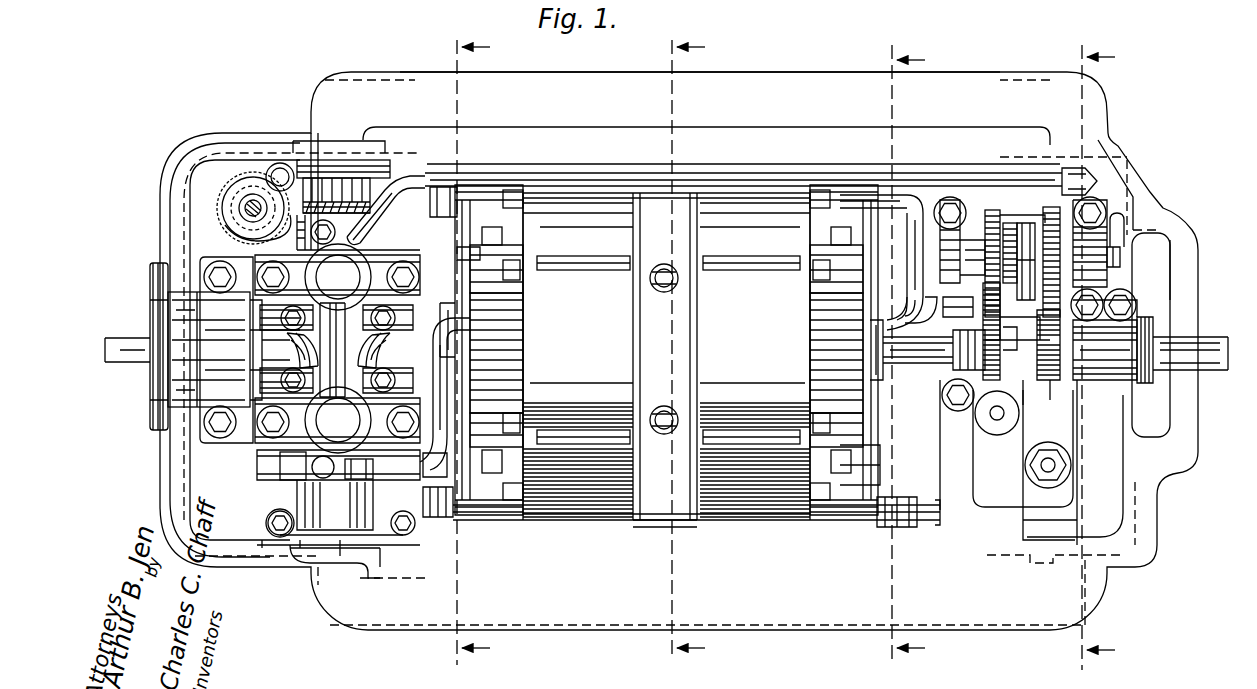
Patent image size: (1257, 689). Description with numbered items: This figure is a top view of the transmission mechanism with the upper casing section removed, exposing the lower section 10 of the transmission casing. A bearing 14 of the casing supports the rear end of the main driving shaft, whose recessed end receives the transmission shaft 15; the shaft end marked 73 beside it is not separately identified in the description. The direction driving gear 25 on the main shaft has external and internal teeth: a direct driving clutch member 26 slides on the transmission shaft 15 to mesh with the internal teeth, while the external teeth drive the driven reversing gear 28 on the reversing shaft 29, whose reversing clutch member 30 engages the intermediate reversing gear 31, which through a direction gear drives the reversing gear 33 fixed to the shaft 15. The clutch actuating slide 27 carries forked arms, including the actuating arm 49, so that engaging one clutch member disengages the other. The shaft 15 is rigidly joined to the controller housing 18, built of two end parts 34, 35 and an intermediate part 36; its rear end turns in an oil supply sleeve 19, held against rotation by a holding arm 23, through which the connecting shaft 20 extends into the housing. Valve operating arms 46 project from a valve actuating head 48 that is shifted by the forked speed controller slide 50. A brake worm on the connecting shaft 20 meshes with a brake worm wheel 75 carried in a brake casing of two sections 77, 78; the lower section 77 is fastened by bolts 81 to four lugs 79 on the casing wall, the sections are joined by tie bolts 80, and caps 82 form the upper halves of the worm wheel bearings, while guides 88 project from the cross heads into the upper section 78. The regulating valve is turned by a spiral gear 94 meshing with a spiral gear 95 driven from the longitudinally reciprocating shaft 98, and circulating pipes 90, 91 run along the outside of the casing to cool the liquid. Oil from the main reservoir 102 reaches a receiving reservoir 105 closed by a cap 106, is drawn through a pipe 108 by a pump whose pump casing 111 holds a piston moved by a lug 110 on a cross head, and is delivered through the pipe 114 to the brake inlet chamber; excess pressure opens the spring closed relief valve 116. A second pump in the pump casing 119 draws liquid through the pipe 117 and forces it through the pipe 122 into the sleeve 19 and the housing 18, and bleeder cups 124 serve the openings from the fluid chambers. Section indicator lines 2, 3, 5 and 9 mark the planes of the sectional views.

The section line 2- 2 is at (905, 357).
The section line 3- 3 is at (683, 346).
The electric motor 5 is at (790, 352).
The section line 9- 9 is at (1093, 358).
The lower section of transmission casing 10 is at (1104, 586).
The bearing 14 is at (1145, 385).
The transmission shaft 15 is at (905, 366).
The controller housing 18 is at (622, 522).
The oil supply sleeve 19 is at (455, 345).
The connecting shaft 20 is at (118, 338).
The holding arm 23 is at (440, 318).
The direction driving gear 25 is at (1065, 375).
The direct driving clutch member 26 is at (1035, 385).
The clutch actuating slide 27 is at (1040, 306).
The driven reversing gear 28 is at (1062, 258).
The reversing shaft 29 is at (1120, 258).
The reversing clutch member 30 is at (1010, 240).
The intermediate reversing gear 31 is at (990, 212).
The reversing gear 33 is at (954, 306).
The end part of controller housing 34 is at (562, 498).
The end part of controller housing 35 is at (745, 505).
The intermediate part of controller housing 36 is at (688, 294).
The valve operating arm 46 is at (870, 370).
The valve actuating head 48 is at (912, 315).
The actuating arm 49 is at (987, 255).
The speed controller slide 50 is at (960, 372).
The drive shaft 73 is at (1218, 372).
The brake worm wheel 75 is at (372, 335).
The brake casing section 77 is at (262, 432).
The brake casing section 78 is at (266, 518).
The lugs 79 is at (262, 543).
The tie bolts 80 is at (262, 462).
The bolts 81 is at (290, 545).
The caps 82 is at (338, 277).
The guides 88 is at (318, 280).
The circulating pipe 90 is at (493, 82).
The circulating pipe 91 is at (512, 618).
The spiral gear 94 is at (343, 205).
The spiral gear 95 is at (240, 236).
The longitudinally reciprocating shaft 98 is at (243, 200).
The main reservoir 102 is at (870, 522).
The receiving reservoir 105 is at (990, 488).
The cap 106 is at (997, 435).
The pipe 108 is at (918, 256).
The lug 110 is at (335, 326).
The pump casing 111 is at (372, 236).
The pipe 114 is at (538, 175).
The spring closed relief valve 116 is at (1058, 468).
The pipe 117 is at (488, 522).
The pump casing 119 is at (300, 466).
The pipe 122 is at (455, 405).
The bleeder cups 124 is at (862, 466).